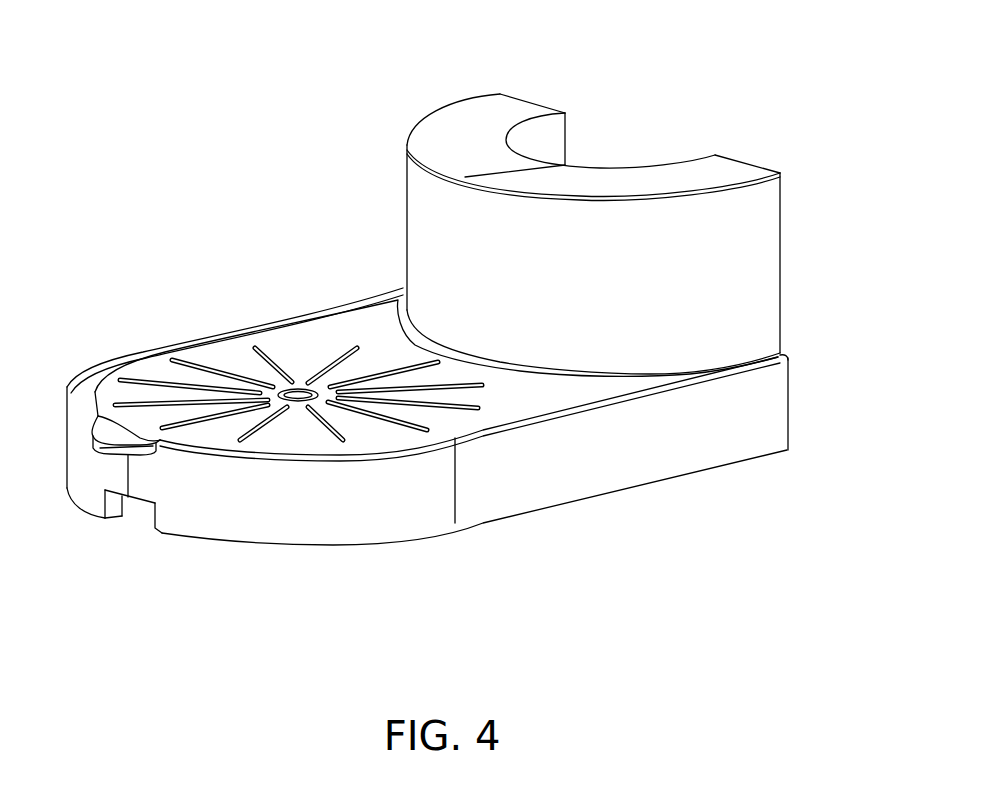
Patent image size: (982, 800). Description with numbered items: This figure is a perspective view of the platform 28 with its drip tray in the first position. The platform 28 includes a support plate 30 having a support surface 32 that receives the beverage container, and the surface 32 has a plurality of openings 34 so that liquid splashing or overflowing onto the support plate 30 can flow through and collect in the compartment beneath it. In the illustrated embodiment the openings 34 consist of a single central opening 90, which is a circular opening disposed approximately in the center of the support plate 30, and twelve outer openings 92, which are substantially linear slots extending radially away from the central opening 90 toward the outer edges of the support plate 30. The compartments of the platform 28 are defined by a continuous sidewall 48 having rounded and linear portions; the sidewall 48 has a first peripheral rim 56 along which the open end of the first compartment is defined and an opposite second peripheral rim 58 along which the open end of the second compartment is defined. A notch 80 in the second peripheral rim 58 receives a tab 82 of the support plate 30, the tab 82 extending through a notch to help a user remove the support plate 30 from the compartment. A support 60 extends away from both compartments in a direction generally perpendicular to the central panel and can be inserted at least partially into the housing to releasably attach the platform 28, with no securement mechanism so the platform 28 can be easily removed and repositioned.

The platform 28 is at (655, 109).
The support plate 30 is at (150, 375).
The support surface 32 is at (300, 340).
The openings 34 is at (258, 350).
The continuous sidewall 48 is at (678, 435).
The first peripheral rim 56 is at (352, 300).
The second peripheral rim 58 is at (398, 538).
The support 60 is at (733, 265).
The notch 80 is at (155, 525).
The tab 82 is at (95, 428).
The central opening 90 is at (298, 403).
The outer openings 92 is at (480, 437).